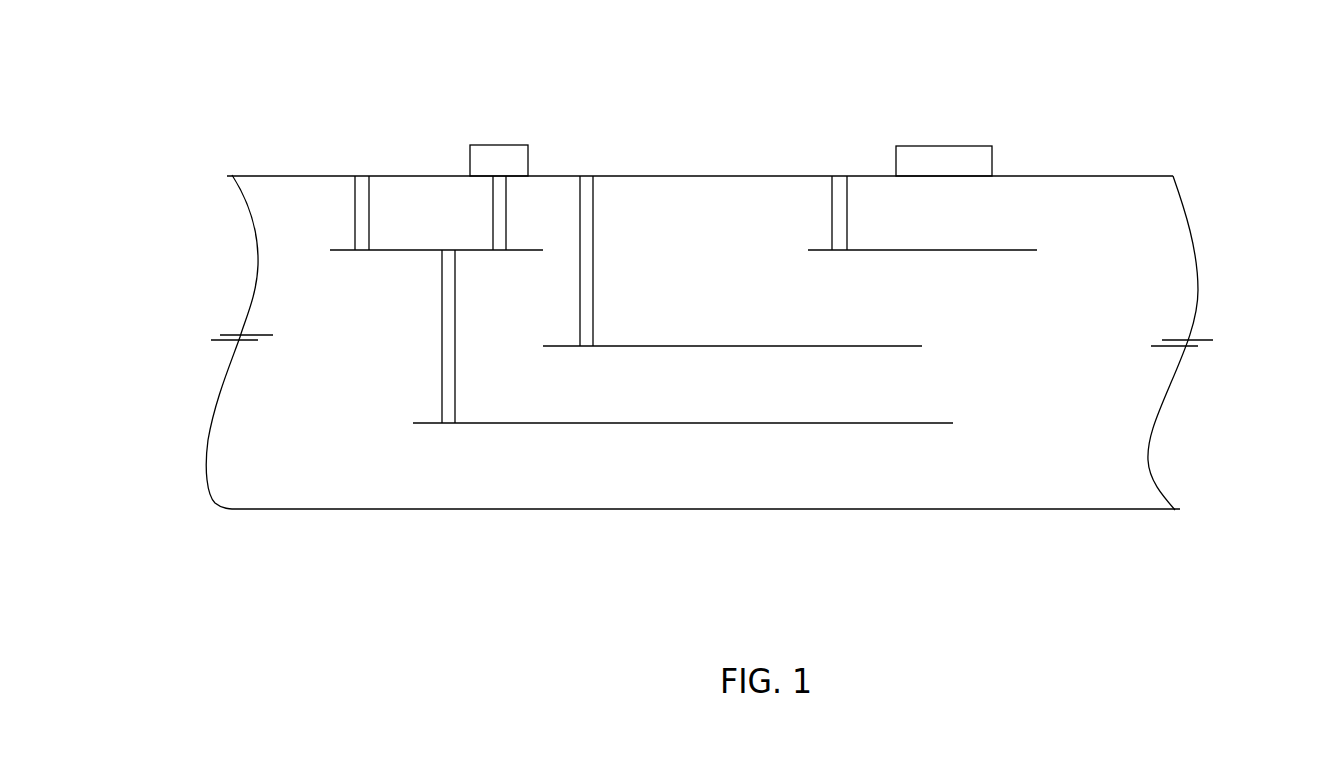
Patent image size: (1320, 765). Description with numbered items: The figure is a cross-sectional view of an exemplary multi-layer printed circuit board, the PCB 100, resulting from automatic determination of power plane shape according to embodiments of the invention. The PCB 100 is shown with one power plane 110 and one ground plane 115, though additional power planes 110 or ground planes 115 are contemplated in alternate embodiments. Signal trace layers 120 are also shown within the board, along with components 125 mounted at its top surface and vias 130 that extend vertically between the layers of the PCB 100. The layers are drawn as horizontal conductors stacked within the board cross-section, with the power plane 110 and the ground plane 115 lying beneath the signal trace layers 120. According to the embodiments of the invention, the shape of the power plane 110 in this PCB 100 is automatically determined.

The multi-layer printed circuit board 100 is at (222, 101).
The power plane 110 is at (886, 346).
The ground plane 115 is at (902, 423).
The signal trace layers 120 is at (344, 250).
The components 125 is at (862, 141).
The vias 130 is at (806, 215).